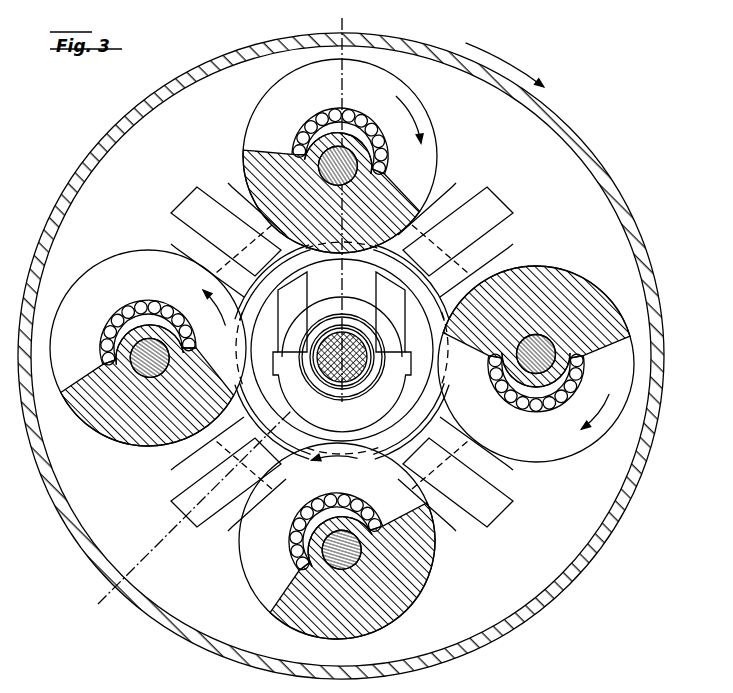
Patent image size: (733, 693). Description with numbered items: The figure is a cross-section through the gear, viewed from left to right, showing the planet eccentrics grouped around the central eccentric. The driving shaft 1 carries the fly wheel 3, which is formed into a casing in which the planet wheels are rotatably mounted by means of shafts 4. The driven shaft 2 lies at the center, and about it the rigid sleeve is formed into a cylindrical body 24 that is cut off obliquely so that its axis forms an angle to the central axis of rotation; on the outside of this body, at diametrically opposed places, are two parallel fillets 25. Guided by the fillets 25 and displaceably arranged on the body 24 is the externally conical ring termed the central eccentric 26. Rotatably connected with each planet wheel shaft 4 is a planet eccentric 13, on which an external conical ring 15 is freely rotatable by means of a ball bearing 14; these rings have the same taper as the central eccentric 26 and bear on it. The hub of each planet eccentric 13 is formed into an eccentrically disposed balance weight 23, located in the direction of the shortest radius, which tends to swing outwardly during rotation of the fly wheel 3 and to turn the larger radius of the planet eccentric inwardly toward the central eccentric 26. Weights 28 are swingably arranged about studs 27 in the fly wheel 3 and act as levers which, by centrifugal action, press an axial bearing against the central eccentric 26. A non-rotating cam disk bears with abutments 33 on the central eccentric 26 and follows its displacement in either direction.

The driving shaft 1 is at (212, 308).
The driven shaft 2 is at (332, 373).
The fly wheel 3 is at (169, 94).
The planet wheel shaft 4 is at (348, 165).
The planet eccentric 13 is at (363, 135).
The ball bearing 14 is at (325, 118).
The external conical ring 15 is at (258, 108).
The balance weight 23 is at (247, 156).
The cylindrical body 24 is at (325, 298).
The fillets 25 is at (237, 350).
The central eccentric 26 is at (388, 437).
The studs 27 is at (230, 245).
The weights 28 is at (187, 190).
The abutments 33 is at (282, 307).